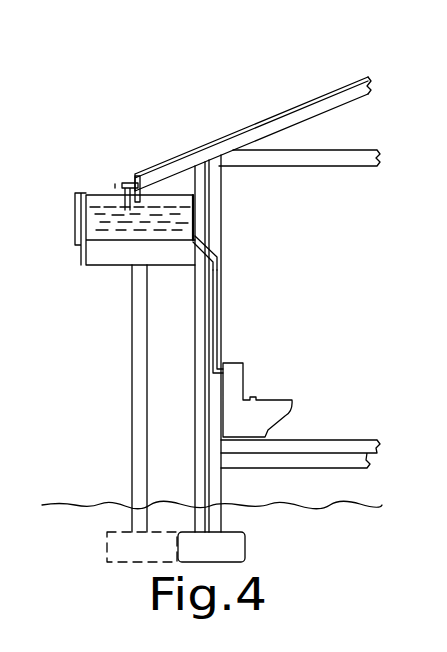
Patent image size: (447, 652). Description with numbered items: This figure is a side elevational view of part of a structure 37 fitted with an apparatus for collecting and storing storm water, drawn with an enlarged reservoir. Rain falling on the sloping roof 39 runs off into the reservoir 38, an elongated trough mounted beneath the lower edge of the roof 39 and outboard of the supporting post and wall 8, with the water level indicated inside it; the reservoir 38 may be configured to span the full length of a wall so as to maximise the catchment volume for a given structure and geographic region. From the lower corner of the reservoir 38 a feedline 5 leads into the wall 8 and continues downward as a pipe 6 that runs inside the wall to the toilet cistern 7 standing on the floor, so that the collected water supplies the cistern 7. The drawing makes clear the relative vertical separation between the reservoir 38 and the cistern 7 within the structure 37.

The feedline 5 is at (202, 240).
The downpipe 6 is at (213, 327).
The toilet cistern 7 is at (237, 390).
The wall 8 is at (220, 285).
The structure 37 is at (136, 113).
The reservoir 38 is at (103, 205).
The roof 39 is at (213, 142).